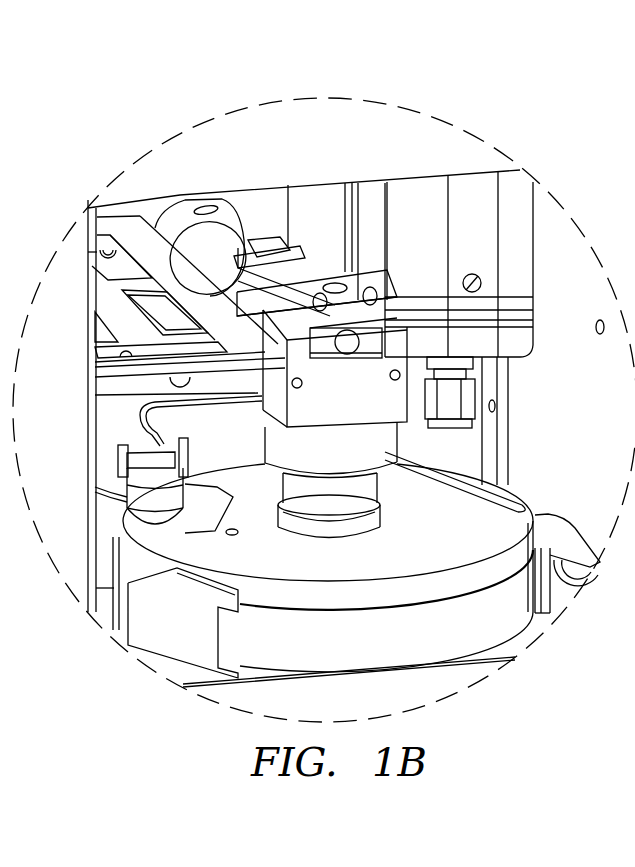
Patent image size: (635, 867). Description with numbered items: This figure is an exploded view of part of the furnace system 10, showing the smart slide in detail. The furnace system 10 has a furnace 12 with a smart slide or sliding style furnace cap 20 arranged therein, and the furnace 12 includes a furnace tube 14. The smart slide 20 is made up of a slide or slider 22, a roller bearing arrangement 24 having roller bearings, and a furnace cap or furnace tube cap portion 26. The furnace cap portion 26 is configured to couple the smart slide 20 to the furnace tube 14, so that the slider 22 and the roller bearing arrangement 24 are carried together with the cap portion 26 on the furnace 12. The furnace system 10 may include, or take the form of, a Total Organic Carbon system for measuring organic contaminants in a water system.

The furnace system 10 is at (324, 373).
The furnace 12 is at (366, 656).
The furnace tube 14 is at (365, 524).
The smart slide 20 is at (341, 412).
The slider 22 is at (452, 412).
The roller bearing arrangement 24 is at (383, 297).
The furnace cap portion 26 is at (387, 470).